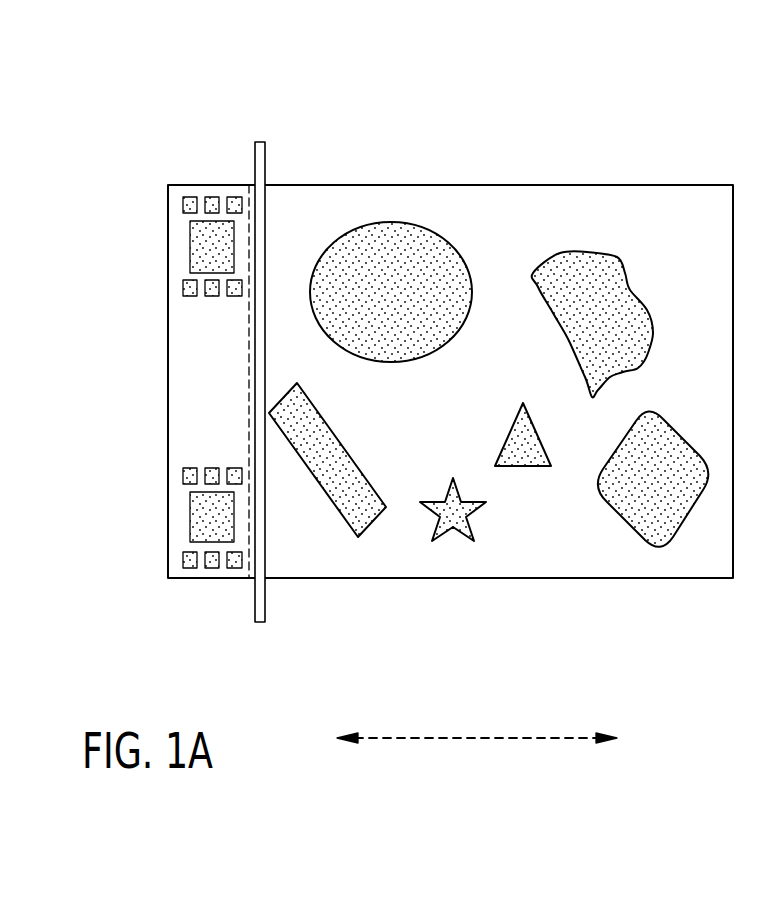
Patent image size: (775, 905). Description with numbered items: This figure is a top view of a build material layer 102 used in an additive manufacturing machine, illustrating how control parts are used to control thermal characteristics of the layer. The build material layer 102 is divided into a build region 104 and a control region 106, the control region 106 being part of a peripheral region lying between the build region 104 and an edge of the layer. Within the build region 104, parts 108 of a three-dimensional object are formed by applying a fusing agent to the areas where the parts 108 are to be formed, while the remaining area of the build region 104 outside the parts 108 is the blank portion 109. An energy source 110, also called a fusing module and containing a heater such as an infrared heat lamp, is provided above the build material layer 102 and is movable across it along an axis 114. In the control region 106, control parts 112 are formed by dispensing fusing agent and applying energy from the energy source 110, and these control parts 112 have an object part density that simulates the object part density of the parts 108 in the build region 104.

The build material layer 102 is at (733, 590).
The build region 104 is at (732, 180).
The control region 106 is at (248, 180).
The parts 108 is at (578, 251).
The blank portion 109 is at (378, 408).
The energy source 110 is at (260, 163).
The control parts 112 is at (153, 197).
The axis 114 is at (478, 741).